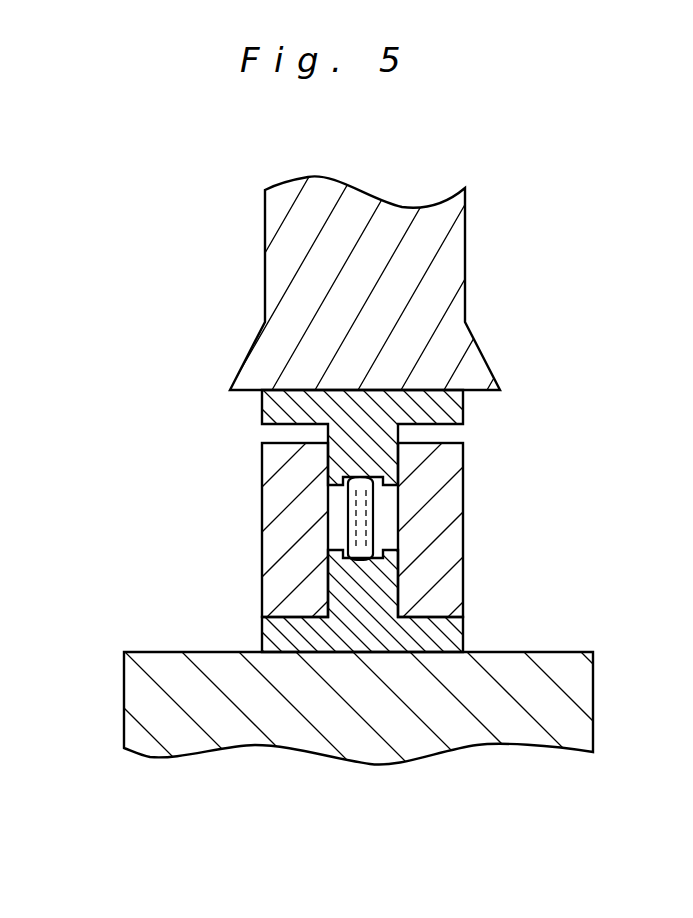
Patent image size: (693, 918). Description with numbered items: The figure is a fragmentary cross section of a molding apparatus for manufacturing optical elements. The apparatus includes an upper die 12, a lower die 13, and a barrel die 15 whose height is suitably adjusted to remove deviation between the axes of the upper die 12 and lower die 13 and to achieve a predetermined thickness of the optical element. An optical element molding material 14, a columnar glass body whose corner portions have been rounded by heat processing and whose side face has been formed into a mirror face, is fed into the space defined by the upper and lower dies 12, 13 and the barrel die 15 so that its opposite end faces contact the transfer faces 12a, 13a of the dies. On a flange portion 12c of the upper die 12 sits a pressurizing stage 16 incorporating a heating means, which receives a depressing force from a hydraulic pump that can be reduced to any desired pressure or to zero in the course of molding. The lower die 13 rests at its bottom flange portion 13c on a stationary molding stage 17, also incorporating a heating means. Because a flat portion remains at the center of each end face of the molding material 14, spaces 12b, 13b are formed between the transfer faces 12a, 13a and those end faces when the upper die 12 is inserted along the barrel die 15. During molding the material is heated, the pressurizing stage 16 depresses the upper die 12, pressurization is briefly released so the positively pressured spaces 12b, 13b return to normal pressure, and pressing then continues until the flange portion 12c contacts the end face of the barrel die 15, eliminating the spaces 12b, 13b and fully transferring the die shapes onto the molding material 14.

The upper die 12 is at (372, 455).
The transfer face of upper die 12a is at (386, 482).
The space 12b is at (338, 482).
The flange portion of upper die 12c is at (436, 414).
The lower die 13 is at (378, 601).
The transfer face of lower die 13a is at (340, 556).
The space 13b is at (388, 560).
The bottom flange portion of lower die 13c is at (458, 633).
The optical element molding material 14 is at (360, 517).
The barrel die 15 is at (448, 531).
The pressurizing stage 16 is at (440, 269).
The stationary molding stage 17 is at (423, 747).